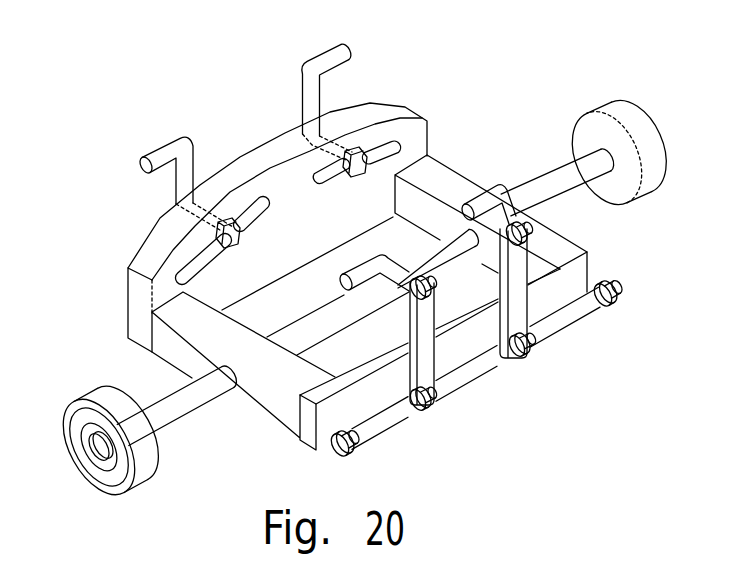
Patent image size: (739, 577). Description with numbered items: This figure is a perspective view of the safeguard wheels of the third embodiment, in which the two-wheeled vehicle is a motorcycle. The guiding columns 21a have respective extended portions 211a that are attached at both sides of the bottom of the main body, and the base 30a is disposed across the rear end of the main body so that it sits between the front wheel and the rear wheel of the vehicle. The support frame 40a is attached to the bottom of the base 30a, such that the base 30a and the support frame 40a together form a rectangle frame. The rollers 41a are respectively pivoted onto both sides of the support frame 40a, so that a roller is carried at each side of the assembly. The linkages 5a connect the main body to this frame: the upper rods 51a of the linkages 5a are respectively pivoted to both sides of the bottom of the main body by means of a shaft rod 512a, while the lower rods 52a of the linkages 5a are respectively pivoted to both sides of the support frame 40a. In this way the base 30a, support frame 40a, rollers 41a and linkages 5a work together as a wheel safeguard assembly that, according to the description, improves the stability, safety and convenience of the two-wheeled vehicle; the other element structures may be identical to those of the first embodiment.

The linkage 5a is at (486, 290).
The guiding column 21a is at (415, 180).
The base 30a is at (153, 229).
The support frame 40a is at (180, 358).
The roller 41a is at (623, 108).
The upper rod 51a is at (556, 277).
The lower rod 52a is at (568, 313).
The extended portion 211a is at (338, 42).
The shaft rod 512a is at (499, 186).